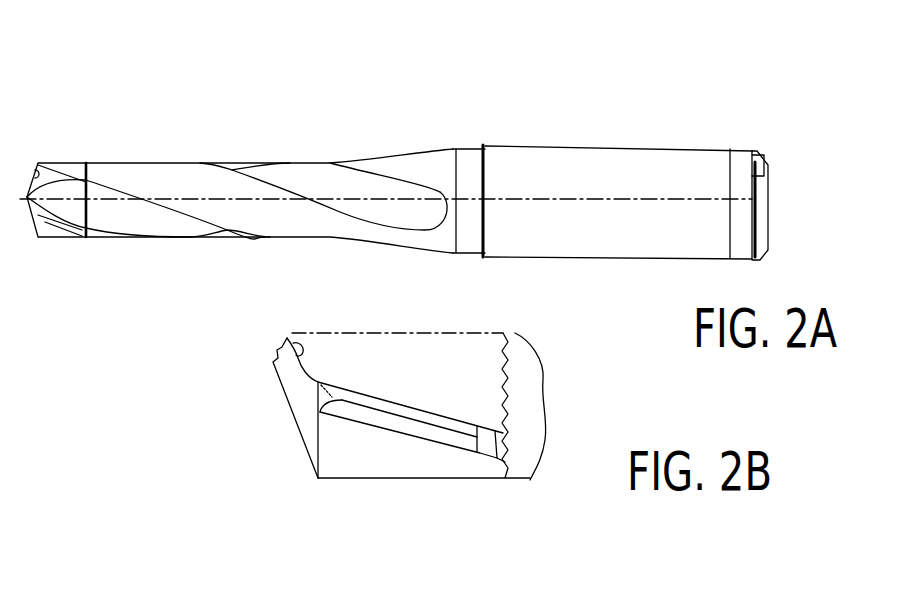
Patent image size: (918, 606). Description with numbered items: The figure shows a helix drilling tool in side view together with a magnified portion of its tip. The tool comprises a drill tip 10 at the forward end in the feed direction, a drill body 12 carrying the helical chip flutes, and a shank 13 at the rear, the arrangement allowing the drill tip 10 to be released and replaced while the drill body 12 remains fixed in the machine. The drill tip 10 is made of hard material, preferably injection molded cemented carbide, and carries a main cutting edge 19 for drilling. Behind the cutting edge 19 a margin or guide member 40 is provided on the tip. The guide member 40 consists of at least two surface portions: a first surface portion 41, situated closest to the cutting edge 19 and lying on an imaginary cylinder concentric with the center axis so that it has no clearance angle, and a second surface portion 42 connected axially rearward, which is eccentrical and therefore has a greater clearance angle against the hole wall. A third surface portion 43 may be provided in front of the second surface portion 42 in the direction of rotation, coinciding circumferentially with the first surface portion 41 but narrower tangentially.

In FIG. 2A, the drill tip 10 is at (55, 128).
In FIG. 2A, the drill body 12 is at (384, 138).
In FIG. 2A, the shank 13 is at (590, 147).
In FIG. 2B, the main cutting edge 19 is at (290, 337).
In FIG. 2B, the guide member 40 is at (411, 469).
In FIG. 2B, the first surface portion 41 is at (330, 398).
In FIG. 2B, the second surface portion 42 is at (388, 420).
In FIG. 2B, the third surface portion 43 is at (432, 418).